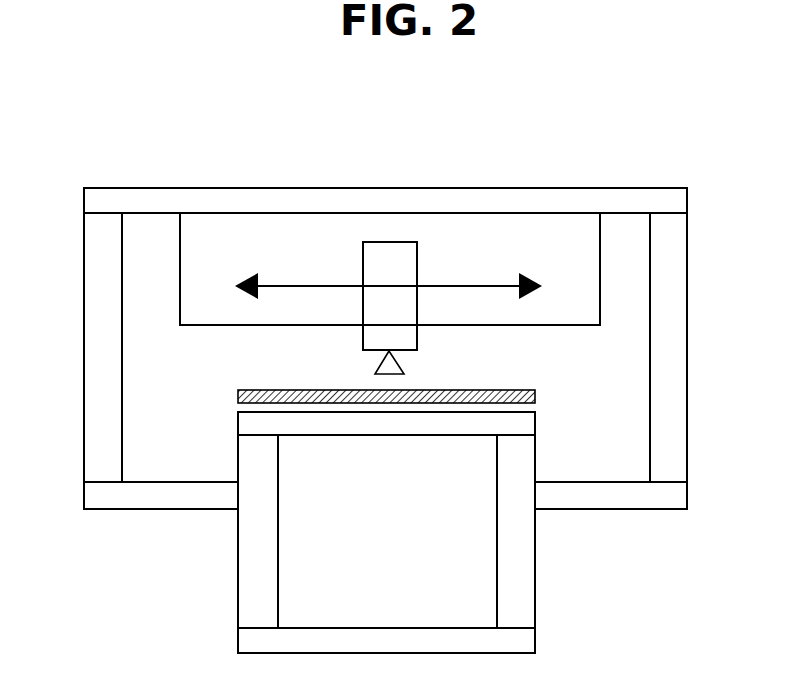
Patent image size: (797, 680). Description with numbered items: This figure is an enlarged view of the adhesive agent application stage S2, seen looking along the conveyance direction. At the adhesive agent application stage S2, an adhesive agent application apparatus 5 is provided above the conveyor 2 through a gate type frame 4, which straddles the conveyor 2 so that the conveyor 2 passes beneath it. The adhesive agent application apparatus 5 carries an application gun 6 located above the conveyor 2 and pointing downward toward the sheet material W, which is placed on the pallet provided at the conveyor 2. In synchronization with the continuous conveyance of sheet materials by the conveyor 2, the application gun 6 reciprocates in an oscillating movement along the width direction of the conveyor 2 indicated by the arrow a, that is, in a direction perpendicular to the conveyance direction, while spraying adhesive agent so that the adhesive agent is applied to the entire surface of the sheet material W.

The conveyor 2 is at (230, 572).
The gate type frame 4 is at (105, 318).
The adhesive agent application apparatus 5 is at (608, 262).
The application gun 6 is at (364, 305).
The arrow a is at (388, 281).
The sheet material W is at (530, 383).
The adhesive agent application stage S2 is at (427, 180).